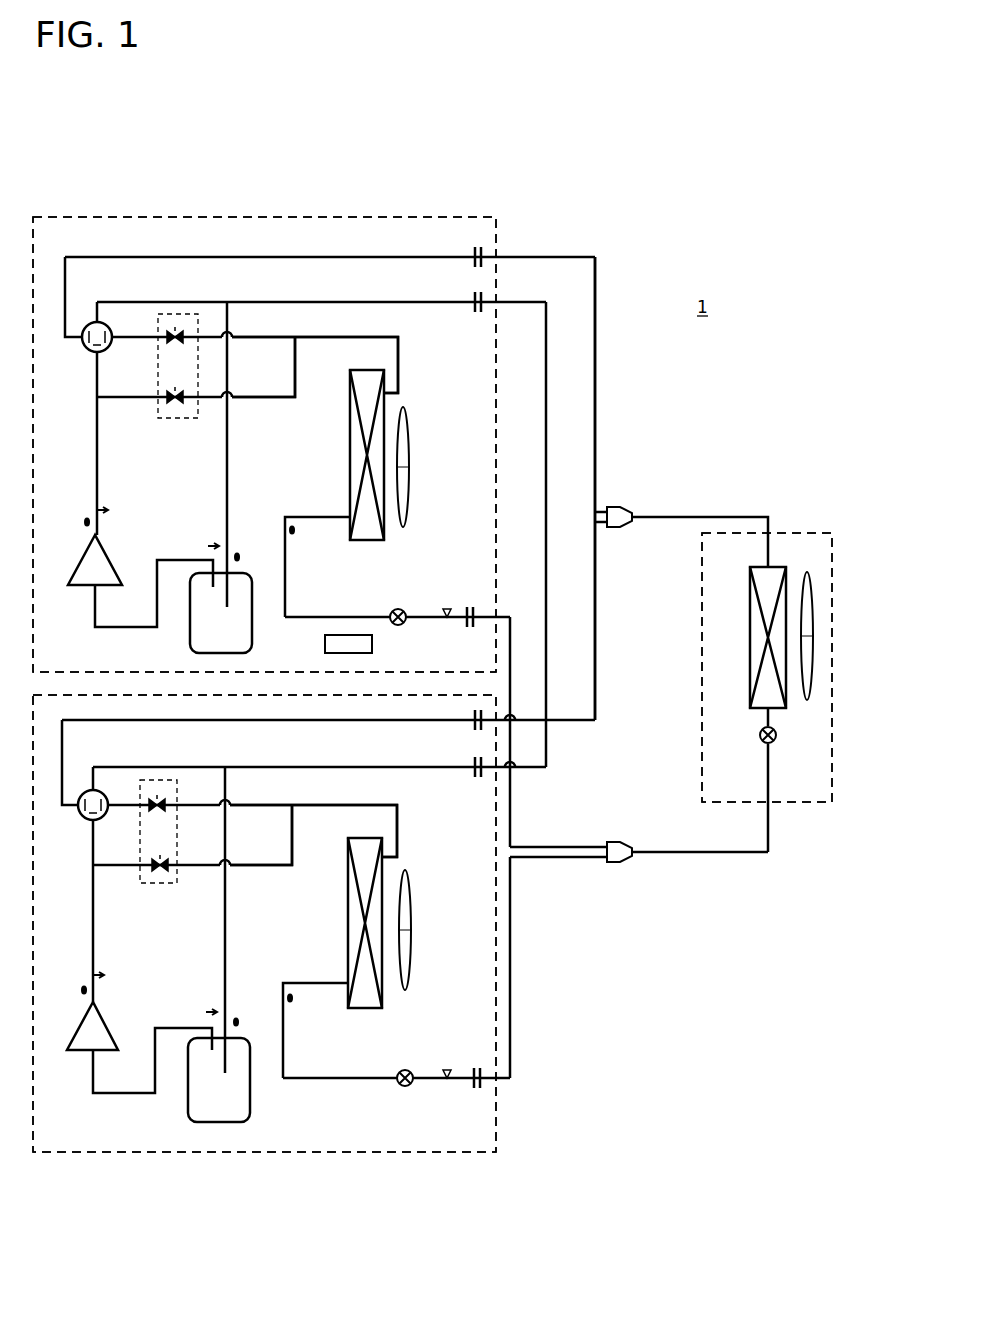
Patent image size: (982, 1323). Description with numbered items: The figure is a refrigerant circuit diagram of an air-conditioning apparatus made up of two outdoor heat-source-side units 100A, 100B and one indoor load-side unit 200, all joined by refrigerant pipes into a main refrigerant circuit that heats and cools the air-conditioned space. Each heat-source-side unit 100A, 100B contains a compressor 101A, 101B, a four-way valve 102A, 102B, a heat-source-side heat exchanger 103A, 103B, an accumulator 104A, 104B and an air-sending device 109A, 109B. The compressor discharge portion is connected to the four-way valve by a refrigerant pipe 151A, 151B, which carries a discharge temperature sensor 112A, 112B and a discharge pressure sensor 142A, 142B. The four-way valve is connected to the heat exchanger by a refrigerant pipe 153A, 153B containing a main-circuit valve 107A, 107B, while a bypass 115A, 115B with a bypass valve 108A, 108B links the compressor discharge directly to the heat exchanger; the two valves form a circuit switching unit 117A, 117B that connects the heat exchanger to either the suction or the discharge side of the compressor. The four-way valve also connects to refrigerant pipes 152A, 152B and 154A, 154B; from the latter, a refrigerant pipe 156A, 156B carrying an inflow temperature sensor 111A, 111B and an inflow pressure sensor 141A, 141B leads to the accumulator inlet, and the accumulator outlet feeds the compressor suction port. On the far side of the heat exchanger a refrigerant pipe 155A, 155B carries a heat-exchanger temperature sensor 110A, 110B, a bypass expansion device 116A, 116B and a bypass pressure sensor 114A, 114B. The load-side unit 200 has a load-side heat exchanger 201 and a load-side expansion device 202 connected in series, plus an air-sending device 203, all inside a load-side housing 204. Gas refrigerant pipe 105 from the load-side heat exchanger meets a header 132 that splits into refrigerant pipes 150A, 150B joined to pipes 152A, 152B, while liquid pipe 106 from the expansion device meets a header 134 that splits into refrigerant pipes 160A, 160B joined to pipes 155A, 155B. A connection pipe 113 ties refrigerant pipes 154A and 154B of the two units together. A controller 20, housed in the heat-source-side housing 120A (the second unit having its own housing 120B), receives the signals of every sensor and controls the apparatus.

The heat-source-side unit 100A is at (229, 191).
The heat-source-side unit 100B is at (254, 1177).
The heat-source-side housing 120A is at (376, 215).
The heat-source-side housing 120B is at (370, 1154).
The compressor 101A is at (108, 560).
The compressor 101B is at (108, 1026).
The four-way valve 102A is at (87, 350).
The four-way valve 102B is at (84, 818).
The heat-source-side heat exchanger 103A is at (383, 542).
The heat-source-side heat exchanger 103B is at (383, 1012).
The accumulator 104A is at (189, 618).
The accumulator 104B is at (187, 1086).
The refrigerant pipe 105 is at (676, 516).
The refrigerant pipe 106 is at (674, 852).
The main-circuit valve 107A is at (173, 318).
The main-circuit valve 107B is at (156, 786).
The bypass valve 108A is at (176, 406).
The bypass valve 108B is at (168, 878).
The air-sending device 109A is at (412, 456).
The air-sending device 109B is at (414, 928).
The heat-exchanger temperature sensor 110A is at (295, 535).
The heat-exchanger temperature sensor 110B is at (294, 1006).
The inflow temperature sensor 111A is at (241, 552).
The inflow temperature sensor 111B is at (240, 1017).
The discharge temperature sensor 112A is at (82, 515).
The discharge temperature sensor 112B is at (80, 983).
The connection pipe 113 is at (547, 436).
The bypass pressure sensor 114A is at (448, 600).
The bypass pressure sensor 114B is at (448, 1066).
The bypass 115A is at (262, 400).
The bypass 115B is at (262, 868).
The bypass expansion device 116A is at (403, 623).
The bypass expansion device 116B is at (408, 1088).
The circuit switching unit 117A is at (157, 381).
The circuit switching unit 117B is at (176, 858).
The header 132 is at (618, 508).
The header 134 is at (620, 843).
The inflow pressure sensor 141A is at (208, 544).
The inflow pressure sensor 141B is at (206, 1010).
The discharge pressure sensor 142A is at (107, 505).
The discharge pressure sensor 142B is at (105, 970).
The refrigerant pipe 150A is at (596, 432).
The refrigerant pipe 150B is at (597, 596).
The refrigerant pipe 151A is at (95, 434).
The refrigerant pipe 151B is at (92, 900).
The refrigerant pipe 152A is at (300, 257).
The refrigerant pipe 152B is at (300, 722).
The refrigerant pipe 153A is at (330, 337).
The refrigerant pipe 153B is at (343, 790).
The refrigerant pipe 154A is at (330, 302).
The refrigerant pipe 154B is at (350, 767).
The refrigerant pipe 155A is at (337, 617).
The refrigerant pipe 155B is at (355, 1080).
The refrigerant pipe 156A is at (229, 470).
The refrigerant pipe 156B is at (227, 942).
The refrigerant pipe 160A is at (512, 834).
The refrigerant pipe 160B is at (512, 914).
The load-side unit 200 is at (788, 500).
The load-side heat exchanger 201 is at (749, 630).
The load-side expansion device 202 is at (760, 742).
The air-sending device 203 is at (808, 705).
The load-side housing 204 is at (808, 532).
The controller 20 is at (325, 645).